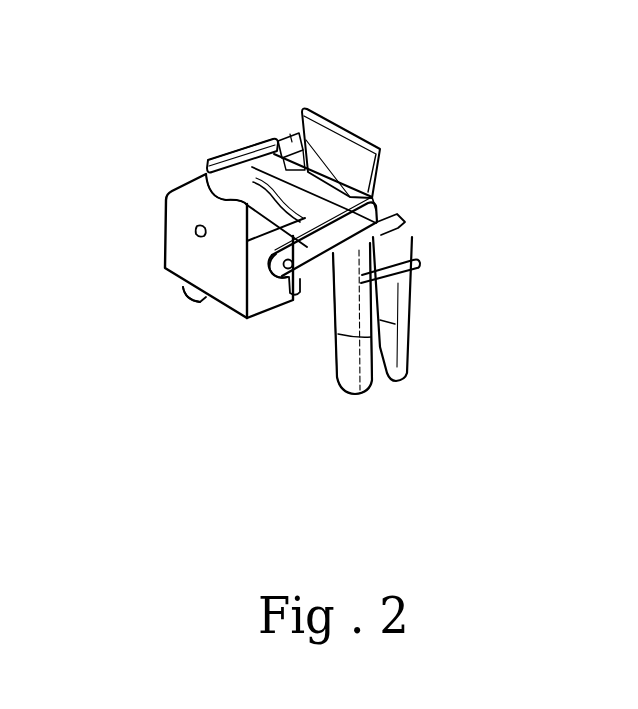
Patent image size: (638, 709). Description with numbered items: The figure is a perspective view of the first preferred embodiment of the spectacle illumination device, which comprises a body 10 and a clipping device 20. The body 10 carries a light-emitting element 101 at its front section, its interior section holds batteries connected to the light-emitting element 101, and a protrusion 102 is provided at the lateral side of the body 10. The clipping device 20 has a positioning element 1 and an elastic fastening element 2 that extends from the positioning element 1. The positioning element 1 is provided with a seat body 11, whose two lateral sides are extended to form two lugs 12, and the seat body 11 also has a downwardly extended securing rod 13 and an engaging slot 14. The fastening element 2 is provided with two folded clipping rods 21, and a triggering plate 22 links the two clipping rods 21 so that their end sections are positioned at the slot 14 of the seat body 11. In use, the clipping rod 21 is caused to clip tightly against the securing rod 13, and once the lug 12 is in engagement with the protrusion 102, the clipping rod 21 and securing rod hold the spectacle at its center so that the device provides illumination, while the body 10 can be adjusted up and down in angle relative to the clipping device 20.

The positioning element 1 is at (242, 138).
The body 10 is at (226, 310).
The light-emitting element 101 is at (196, 235).
The protrusion 102 is at (300, 306).
The seat body 11 is at (324, 145).
The lug 12 is at (225, 158).
The securing rod 13 is at (190, 297).
The engaging slot 14 is at (295, 134).
The elastic fastening element 2 is at (408, 216).
The clipping device 20 is at (394, 176).
The clipping rod 21 is at (405, 308).
The triggering plate 22 is at (340, 130).